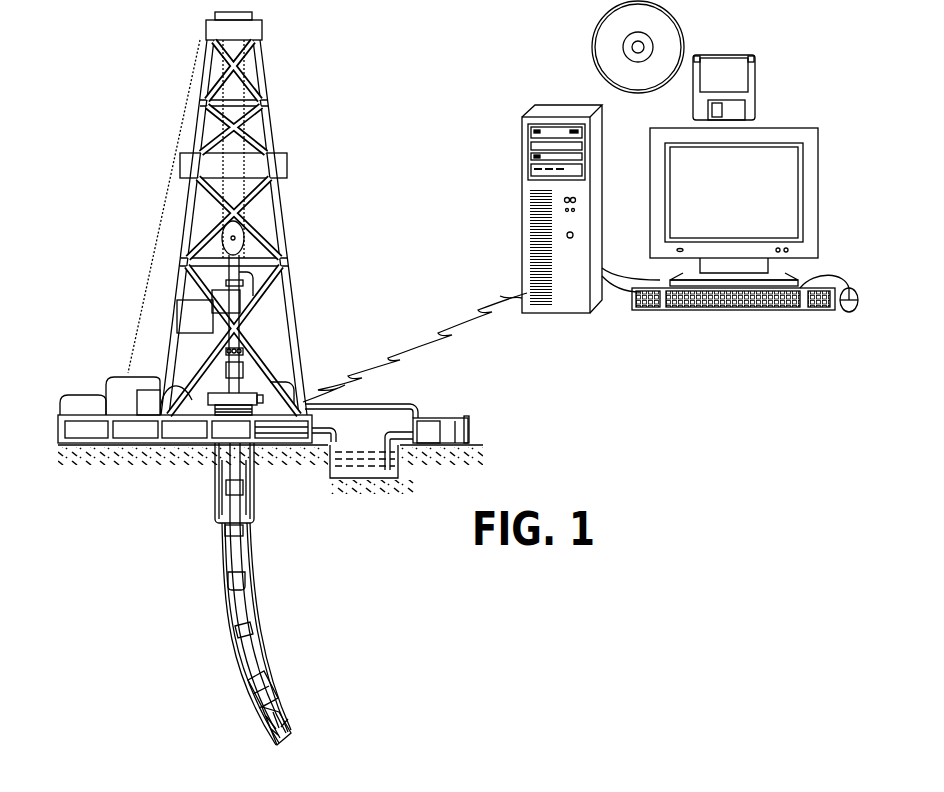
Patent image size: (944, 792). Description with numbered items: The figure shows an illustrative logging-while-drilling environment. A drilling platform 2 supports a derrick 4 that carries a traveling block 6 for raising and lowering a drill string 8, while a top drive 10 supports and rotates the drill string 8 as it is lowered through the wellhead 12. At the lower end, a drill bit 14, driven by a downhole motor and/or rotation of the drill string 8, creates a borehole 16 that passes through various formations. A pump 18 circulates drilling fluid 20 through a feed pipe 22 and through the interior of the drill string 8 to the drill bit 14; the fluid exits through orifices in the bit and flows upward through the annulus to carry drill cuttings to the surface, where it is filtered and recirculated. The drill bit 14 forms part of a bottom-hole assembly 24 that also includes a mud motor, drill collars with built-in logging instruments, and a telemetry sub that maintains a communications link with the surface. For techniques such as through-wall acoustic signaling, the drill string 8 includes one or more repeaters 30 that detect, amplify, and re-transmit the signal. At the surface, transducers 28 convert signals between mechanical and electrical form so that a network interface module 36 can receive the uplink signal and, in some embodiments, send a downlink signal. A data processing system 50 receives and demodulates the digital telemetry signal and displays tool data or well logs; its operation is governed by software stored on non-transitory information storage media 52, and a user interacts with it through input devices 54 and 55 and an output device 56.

The drilling platform 2 is at (58, 420).
The derrick 4 is at (270, 126).
The traveling block 6 is at (240, 243).
The drill string 8 is at (241, 562).
The top drive 10 is at (236, 300).
The wellhead 12 is at (247, 390).
The drill bit 14 is at (288, 721).
The borehole 16 is at (250, 567).
The pump 18 is at (424, 422).
The drilling fluid 20 is at (345, 467).
The feed pipe 22 is at (372, 406).
The bottom-hole assembly 24 is at (257, 743).
The transducers 28 is at (237, 340).
The repeaters 30 is at (228, 589).
The network interface module 36 is at (155, 390).
The data processing system 50 is at (603, 232).
The non-transitory information storage media 52 is at (684, 43).
The input device 54 is at (766, 310).
The input device 55 is at (846, 312).
The output device 56 is at (818, 222).